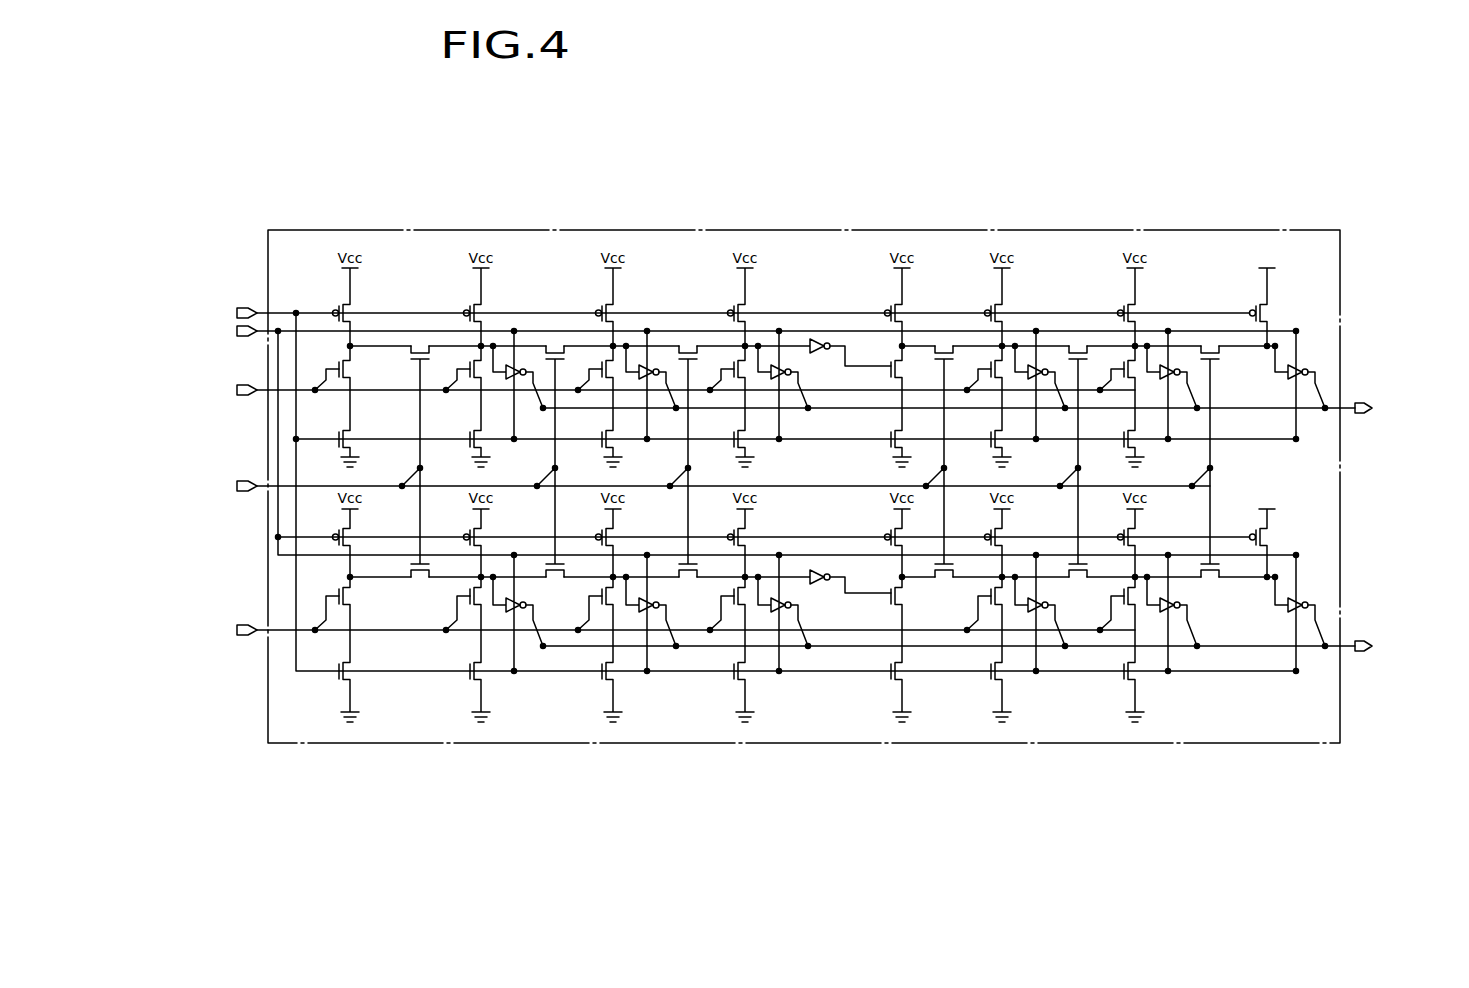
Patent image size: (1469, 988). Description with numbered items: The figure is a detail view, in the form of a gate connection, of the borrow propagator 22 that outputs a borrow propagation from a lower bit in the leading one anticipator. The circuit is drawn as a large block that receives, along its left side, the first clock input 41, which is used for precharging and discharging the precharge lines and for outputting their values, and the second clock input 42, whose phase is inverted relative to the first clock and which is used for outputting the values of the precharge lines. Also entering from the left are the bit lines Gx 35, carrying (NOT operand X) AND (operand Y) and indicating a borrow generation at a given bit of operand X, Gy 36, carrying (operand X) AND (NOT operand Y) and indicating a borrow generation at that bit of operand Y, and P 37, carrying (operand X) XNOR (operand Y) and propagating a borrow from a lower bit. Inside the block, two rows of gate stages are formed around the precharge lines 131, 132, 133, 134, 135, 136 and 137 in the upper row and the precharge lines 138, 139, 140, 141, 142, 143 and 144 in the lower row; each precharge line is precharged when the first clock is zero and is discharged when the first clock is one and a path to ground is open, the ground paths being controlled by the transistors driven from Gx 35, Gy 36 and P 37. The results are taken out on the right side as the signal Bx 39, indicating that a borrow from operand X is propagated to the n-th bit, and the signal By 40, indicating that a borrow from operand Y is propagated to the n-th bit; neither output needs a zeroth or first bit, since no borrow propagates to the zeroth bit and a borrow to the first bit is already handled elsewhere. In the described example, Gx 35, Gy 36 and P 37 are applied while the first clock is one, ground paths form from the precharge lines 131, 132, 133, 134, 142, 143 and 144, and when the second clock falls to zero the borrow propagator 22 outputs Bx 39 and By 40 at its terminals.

The borrow propagator 22 is at (1100, 230).
The Gx bit line 35 is at (148, 408).
The Gy bit line 36 is at (150, 650).
The P bit line 37 is at (160, 505).
The Bx signal 39 is at (1400, 392).
The By signal 40 is at (1395, 625).
The clock 1 input 41 is at (207, 293).
The clock 2 input 42 is at (150, 333).
The precharge line 131 is at (388, 346).
The precharge line 132 is at (533, 346).
The precharge line 133 is at (663, 346).
The precharge line 134 is at (797, 346).
The precharge line 135 is at (1053, 346).
The precharge line 136 is at (1185, 346).
The precharge line 137 is at (1273, 346).
The precharge line 138 is at (383, 580).
The precharge line 139 is at (533, 580).
The precharge line 140 is at (666, 580).
The precharge line 141 is at (798, 580).
The precharge line 142 is at (1058, 580).
The precharge line 143 is at (1192, 580).
The precharge line 144 is at (1252, 580).